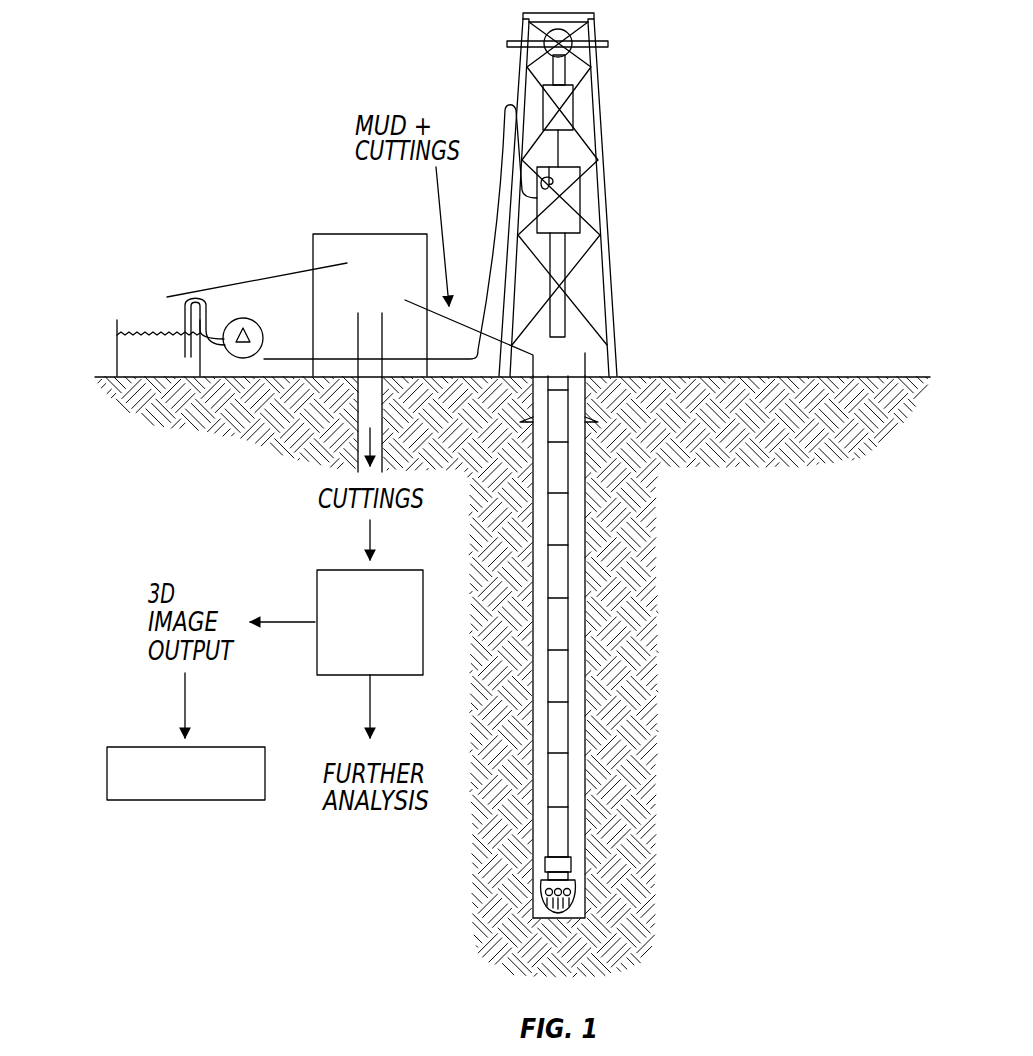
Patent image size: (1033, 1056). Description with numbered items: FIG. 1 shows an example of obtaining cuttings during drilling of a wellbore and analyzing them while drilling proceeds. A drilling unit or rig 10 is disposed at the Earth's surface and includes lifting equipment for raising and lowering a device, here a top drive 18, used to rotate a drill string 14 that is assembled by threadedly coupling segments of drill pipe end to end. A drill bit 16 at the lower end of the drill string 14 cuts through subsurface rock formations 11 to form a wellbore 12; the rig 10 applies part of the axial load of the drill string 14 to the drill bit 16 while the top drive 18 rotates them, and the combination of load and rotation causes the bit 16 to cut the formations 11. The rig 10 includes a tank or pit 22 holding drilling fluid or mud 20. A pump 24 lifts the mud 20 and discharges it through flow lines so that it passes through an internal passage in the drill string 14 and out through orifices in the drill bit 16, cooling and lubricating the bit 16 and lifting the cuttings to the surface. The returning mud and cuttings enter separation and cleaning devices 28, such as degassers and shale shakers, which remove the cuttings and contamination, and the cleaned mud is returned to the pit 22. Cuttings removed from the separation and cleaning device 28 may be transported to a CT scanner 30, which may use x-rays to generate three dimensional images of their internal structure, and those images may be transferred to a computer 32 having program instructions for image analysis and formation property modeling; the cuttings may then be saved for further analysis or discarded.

The drilling unit or rig 10 is at (600, 115).
The subsurface rock formations 11 is at (777, 572).
The wellbore 12 is at (540, 822).
The drill string 14 is at (560, 429).
The drill bit 16 is at (575, 897).
The top drive 18 is at (557, 220).
The drilling fluid (mud) 20 is at (148, 350).
The tank or pit 22 is at (117, 350).
The pump 24 is at (261, 326).
The separation and cleaning devices 28 is at (365, 245).
The CT scanner 30 is at (328, 675).
The computer 32 is at (122, 800).